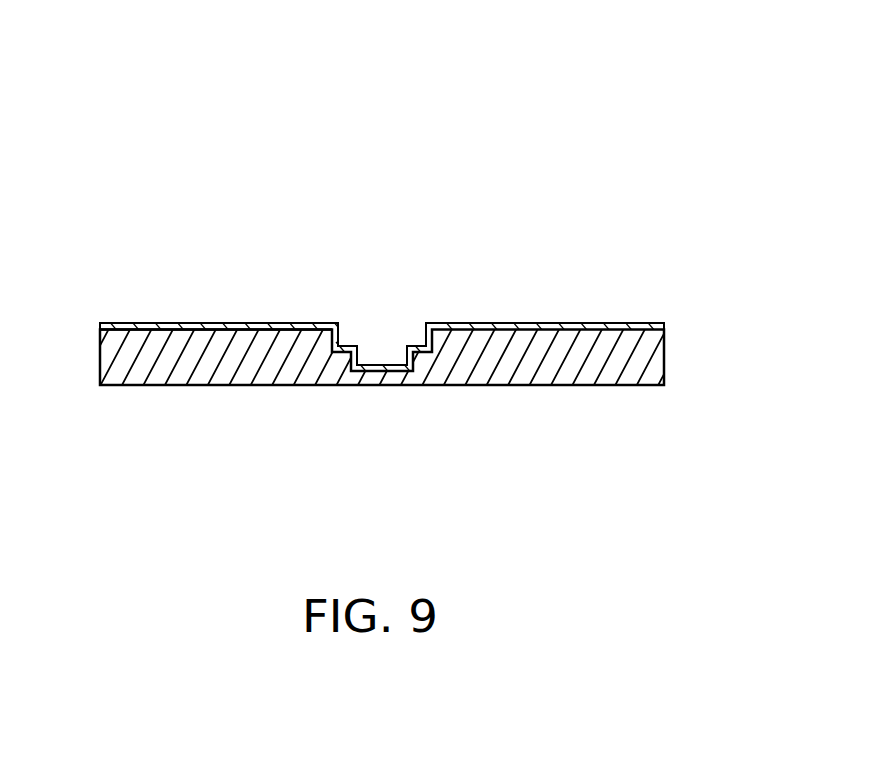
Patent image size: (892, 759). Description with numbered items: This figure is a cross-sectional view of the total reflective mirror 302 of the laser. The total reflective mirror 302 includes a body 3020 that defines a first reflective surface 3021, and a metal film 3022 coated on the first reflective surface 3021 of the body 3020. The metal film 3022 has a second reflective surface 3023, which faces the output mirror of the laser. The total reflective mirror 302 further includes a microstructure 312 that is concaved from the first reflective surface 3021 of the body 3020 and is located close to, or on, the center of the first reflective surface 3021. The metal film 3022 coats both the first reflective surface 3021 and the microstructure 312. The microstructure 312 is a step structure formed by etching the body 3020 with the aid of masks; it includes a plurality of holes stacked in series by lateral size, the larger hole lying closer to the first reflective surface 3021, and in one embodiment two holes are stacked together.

The total reflective mirror 302 is at (368, 91).
The body 3020 is at (652, 356).
The first reflective surface 3021 is at (138, 332).
The metal film 3022 is at (618, 327).
The second reflective surface 3023 is at (172, 323).
The microstructure 312 is at (385, 347).